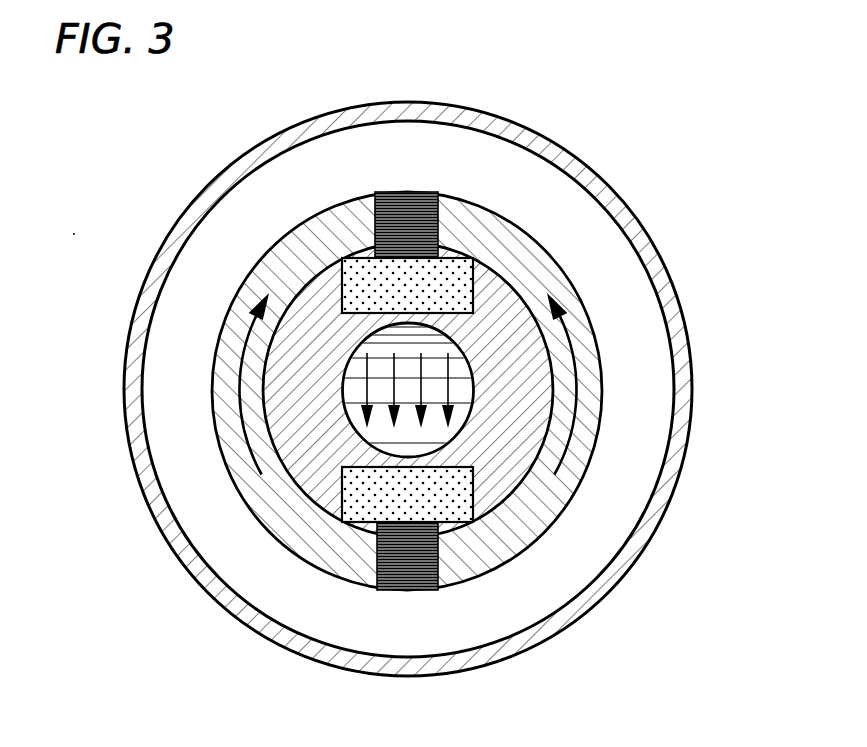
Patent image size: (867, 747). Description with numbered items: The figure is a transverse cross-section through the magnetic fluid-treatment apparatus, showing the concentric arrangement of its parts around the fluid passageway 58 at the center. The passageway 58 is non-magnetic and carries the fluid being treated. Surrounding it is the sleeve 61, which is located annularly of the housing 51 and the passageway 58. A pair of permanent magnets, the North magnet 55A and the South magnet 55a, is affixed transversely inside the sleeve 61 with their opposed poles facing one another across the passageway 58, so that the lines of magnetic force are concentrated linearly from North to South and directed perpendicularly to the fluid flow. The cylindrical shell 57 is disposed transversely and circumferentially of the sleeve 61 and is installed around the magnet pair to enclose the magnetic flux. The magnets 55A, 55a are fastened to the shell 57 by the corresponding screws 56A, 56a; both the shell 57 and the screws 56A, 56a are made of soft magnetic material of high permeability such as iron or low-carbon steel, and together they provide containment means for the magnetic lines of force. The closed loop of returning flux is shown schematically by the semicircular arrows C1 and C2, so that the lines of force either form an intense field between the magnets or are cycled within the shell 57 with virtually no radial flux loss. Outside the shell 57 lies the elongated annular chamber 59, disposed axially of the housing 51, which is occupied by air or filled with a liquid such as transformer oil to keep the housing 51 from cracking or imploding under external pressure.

The housing 51 is at (332, 122).
The cylindrical shell 57 is at (287, 253).
The sleeve 61 is at (284, 430).
The permanent magnet 55A is at (472, 276).
The permanent magnet 55a is at (344, 505).
The screw 56A is at (448, 212).
The screw 56a is at (457, 584).
The fluid passageway 58 is at (443, 432).
The annular chamber 59 is at (640, 352).
The circular arrow C1 is at (238, 368).
The circular arrow C2 is at (578, 377).